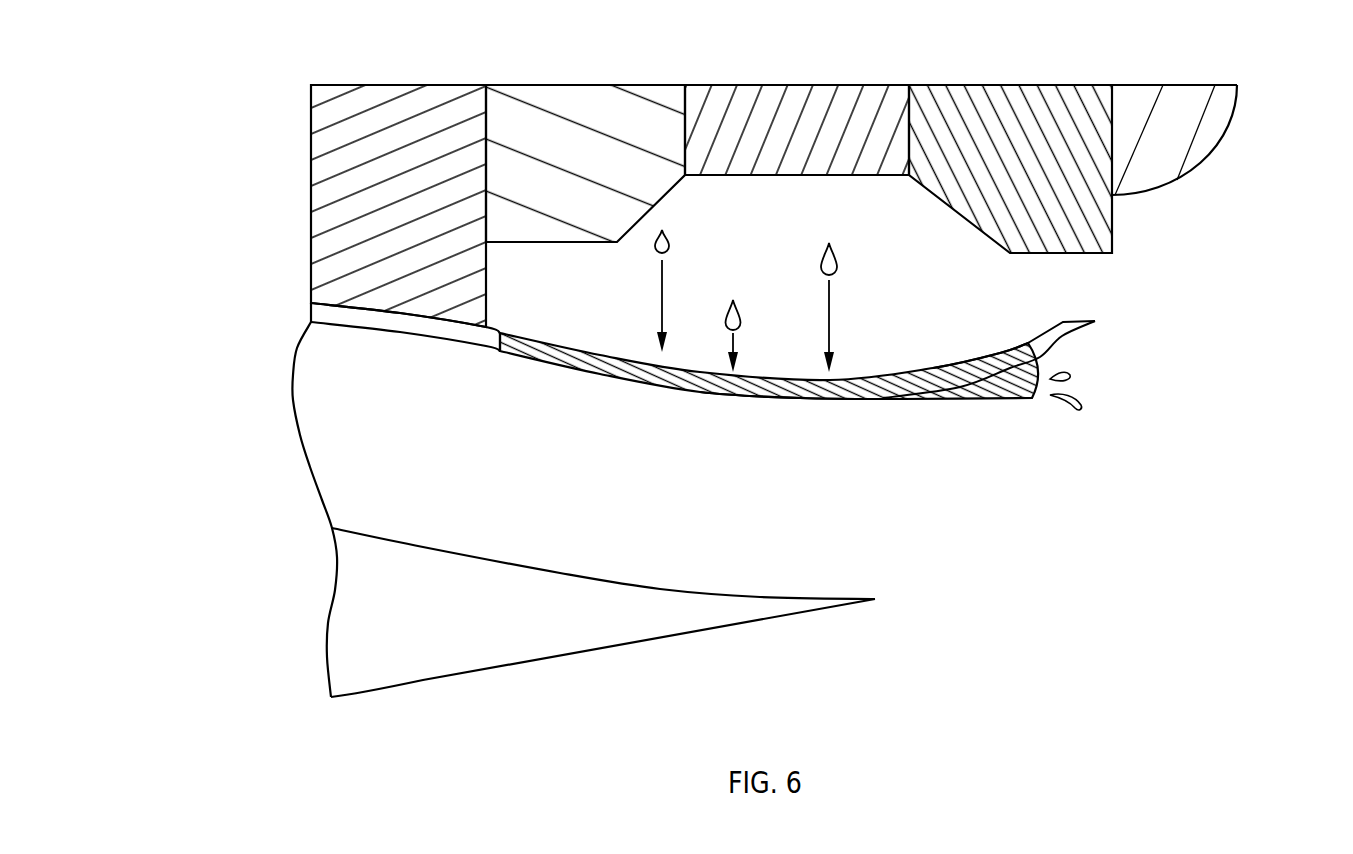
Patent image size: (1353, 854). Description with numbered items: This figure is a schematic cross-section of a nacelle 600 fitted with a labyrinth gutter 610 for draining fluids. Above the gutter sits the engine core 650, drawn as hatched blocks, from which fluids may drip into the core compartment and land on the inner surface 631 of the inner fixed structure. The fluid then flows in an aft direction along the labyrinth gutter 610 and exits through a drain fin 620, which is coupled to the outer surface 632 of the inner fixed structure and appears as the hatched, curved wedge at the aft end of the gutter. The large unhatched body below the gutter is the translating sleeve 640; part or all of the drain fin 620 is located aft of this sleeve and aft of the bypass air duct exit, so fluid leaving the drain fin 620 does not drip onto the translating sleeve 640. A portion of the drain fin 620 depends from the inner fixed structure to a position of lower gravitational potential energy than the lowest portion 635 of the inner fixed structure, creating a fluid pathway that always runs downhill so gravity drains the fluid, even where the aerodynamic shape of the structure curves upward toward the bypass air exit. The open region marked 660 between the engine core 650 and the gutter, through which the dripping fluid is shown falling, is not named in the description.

The nacelle 600 is at (1168, 603).
The labyrinth gutter 610 is at (707, 395).
The drain fin 620 is at (982, 398).
The inner surface 631 is at (987, 353).
The outer surface 632 is at (1080, 338).
The lowest portion 635 is at (800, 403).
The translating sleeve 640 is at (773, 622).
The engine core 650 is at (762, 175).
The fluid channel 660 is at (906, 322).